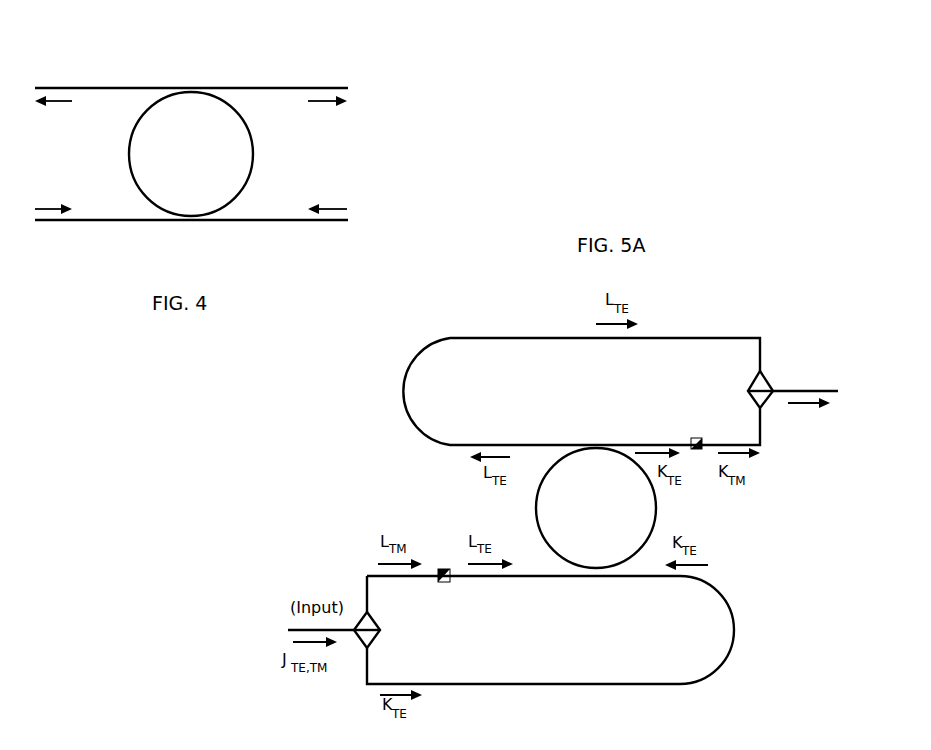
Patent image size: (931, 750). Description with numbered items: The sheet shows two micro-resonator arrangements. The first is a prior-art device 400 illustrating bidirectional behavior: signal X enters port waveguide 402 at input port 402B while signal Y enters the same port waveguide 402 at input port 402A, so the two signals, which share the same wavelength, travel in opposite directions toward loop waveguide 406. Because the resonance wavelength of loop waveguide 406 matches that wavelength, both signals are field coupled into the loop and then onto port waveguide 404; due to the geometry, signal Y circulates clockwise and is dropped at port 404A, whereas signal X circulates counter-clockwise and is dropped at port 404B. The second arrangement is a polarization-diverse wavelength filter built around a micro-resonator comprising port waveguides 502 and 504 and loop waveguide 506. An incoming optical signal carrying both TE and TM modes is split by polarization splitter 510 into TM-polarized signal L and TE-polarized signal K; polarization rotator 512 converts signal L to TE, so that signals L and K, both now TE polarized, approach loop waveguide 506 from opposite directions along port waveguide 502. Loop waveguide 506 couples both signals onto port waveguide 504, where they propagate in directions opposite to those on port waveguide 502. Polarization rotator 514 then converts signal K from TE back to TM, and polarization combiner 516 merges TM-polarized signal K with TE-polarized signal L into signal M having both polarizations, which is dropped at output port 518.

In FIG. 4, the device 400 is at (397, 82).
In FIG. 4, the port waveguide 402 is at (191, 232).
In FIG. 4, the input port 402A is at (332, 229).
In FIG. 4, the input port 402B is at (47, 229).
In FIG. 4, the port waveguide 404 is at (191, 77).
In FIG. 4, the port 404A is at (330, 81).
In FIG. 4, the port 404B is at (45, 81).
In FIG. 4, the loop waveguide 406 is at (177, 165).
In FIG. 5A, the port waveguide 502 is at (733, 622).
In FIG. 5A, the port waveguide 504 is at (397, 390).
In FIG. 5A, the loop waveguide 506 is at (582, 521).
In FIG. 5A, the polarization splitter 510 is at (373, 640).
In FIG. 5A, the polarization rotator 512 is at (467, 590).
In FIG. 5A, the polarization rotator 514 is at (674, 428).
In FIG. 5A, the polarization combiner 516 is at (753, 382).
In FIG. 5A, the drop port 518 is at (838, 387).